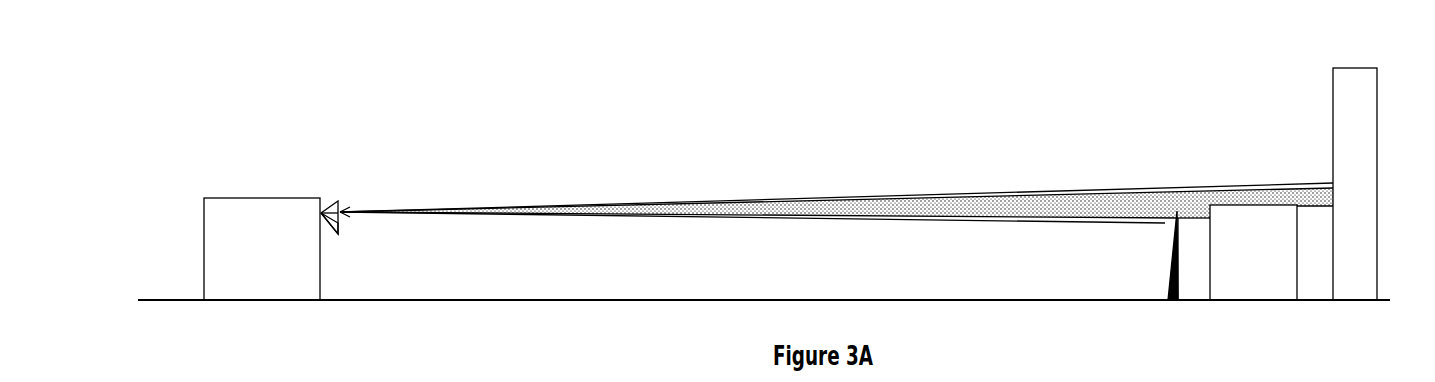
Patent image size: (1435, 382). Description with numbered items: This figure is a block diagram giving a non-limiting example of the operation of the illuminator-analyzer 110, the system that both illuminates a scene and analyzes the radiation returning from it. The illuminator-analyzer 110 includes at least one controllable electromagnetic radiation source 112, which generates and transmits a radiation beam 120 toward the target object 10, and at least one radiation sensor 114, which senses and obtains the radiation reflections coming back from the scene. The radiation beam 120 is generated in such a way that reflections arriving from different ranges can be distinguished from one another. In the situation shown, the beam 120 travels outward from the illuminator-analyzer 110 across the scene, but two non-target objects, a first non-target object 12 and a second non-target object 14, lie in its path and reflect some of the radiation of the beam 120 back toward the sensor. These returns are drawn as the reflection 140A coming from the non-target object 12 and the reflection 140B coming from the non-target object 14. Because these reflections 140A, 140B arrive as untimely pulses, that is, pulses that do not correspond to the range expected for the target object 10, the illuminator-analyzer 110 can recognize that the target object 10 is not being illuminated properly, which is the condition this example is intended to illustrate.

The target object 10 is at (1243, 302).
The illuminator-analyzer 110 is at (283, 197).
The controllable electromagnetic radiation source 112 is at (331, 204).
The radiation sensor 114 is at (331, 226).
The radiation beam 120 is at (743, 203).
The reflection 140A is at (985, 224).
The reflection 140B is at (1220, 183).
The non-target object 12 is at (1171, 264).
The non-target object 14 is at (1342, 67).